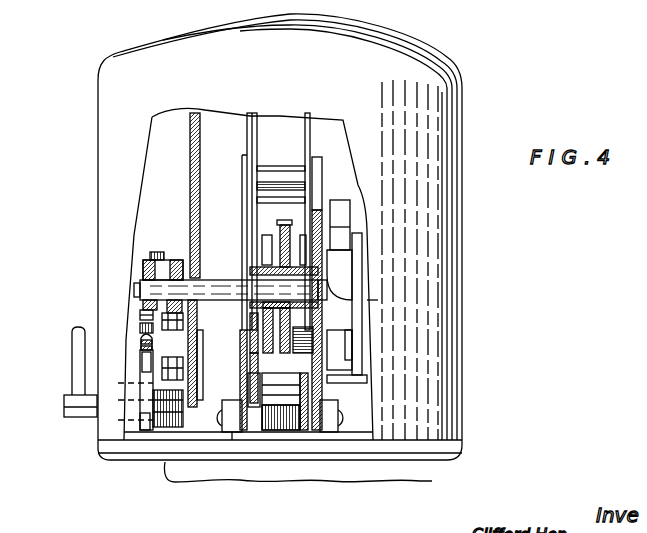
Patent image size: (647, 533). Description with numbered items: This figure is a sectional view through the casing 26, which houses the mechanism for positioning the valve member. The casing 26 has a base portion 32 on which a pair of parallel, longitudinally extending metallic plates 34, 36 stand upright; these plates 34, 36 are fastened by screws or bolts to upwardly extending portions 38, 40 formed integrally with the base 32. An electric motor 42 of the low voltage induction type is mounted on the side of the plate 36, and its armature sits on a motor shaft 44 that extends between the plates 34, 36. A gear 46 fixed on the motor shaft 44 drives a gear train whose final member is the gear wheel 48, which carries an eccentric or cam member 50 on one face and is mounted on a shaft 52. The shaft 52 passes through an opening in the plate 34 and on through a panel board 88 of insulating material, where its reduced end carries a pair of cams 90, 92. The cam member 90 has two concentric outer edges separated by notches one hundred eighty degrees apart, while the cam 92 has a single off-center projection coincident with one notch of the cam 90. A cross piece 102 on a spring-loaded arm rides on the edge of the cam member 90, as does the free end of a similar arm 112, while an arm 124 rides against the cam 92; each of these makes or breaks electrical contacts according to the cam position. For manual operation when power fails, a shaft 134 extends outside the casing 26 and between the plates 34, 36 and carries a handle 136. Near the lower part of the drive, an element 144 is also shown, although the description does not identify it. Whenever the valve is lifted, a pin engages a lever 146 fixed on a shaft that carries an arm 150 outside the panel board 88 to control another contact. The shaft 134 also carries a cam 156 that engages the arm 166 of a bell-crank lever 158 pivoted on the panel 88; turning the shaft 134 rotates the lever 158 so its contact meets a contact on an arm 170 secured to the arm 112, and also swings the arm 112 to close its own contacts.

The casing 26 is at (470, 75).
The base portion 32 is at (127, 456).
The metallic plate 34 is at (250, 178).
The metallic plate 36 is at (322, 165).
The upwardly extending portion 38 is at (229, 425).
The upwardly extending portion 40 is at (328, 425).
The electric motor 42 is at (372, 300).
The motor shaft 44 is at (294, 342).
The gear 46 is at (313, 328).
The gear wheel 48 is at (290, 236).
The eccentric or cam member 50 is at (272, 347).
The shaft 52 is at (214, 285).
The panel board 88 is at (192, 186).
The cam member 90 is at (146, 272).
The cam 92 is at (176, 270).
The cross piece 102 is at (153, 256).
The arm 112 is at (140, 306).
The arm 124 is at (190, 318).
The shaft 134 is at (76, 405).
The handle 136 is at (76, 352).
The gear 144 is at (177, 428).
The lever 146 is at (222, 340).
The arm 150 is at (176, 360).
The cam 156 is at (145, 428).
The bell-crank lever 158 is at (141, 344).
The arm 166 is at (148, 402).
The arm 170 is at (140, 326).